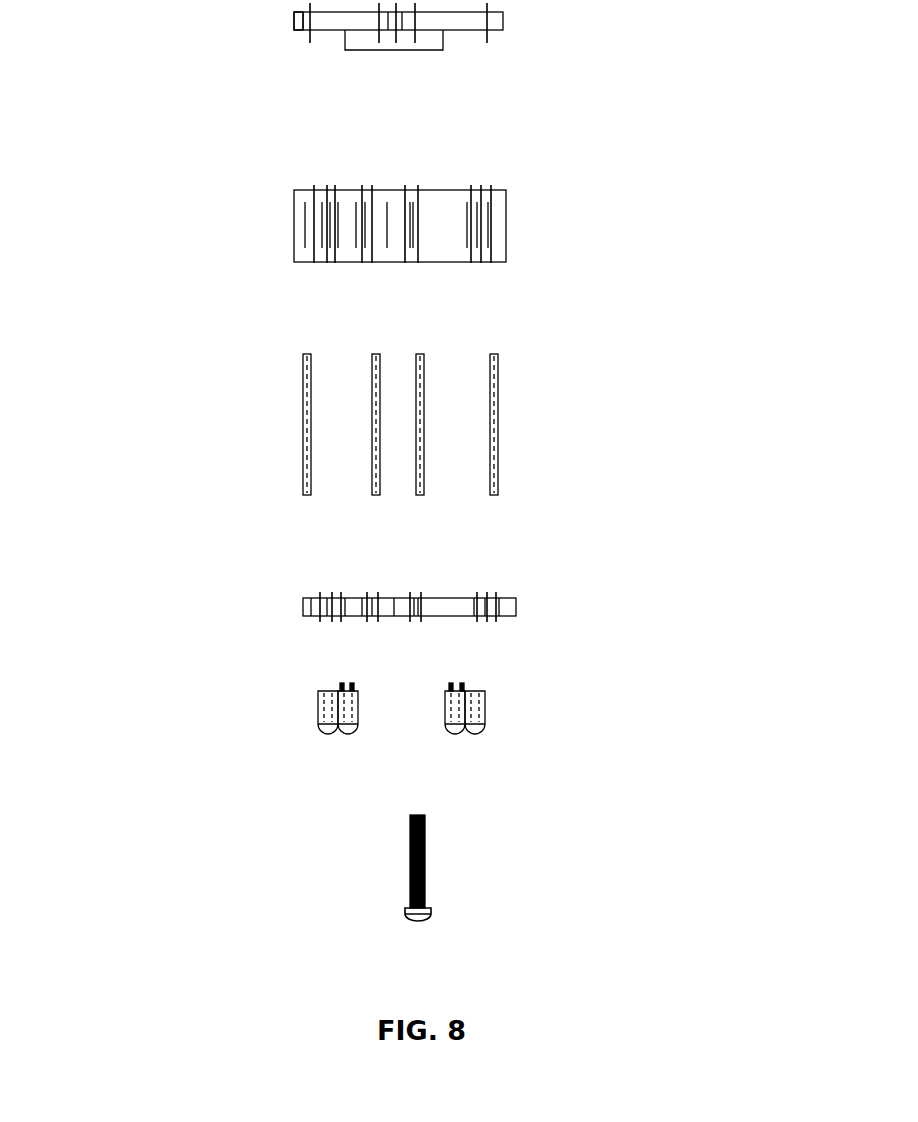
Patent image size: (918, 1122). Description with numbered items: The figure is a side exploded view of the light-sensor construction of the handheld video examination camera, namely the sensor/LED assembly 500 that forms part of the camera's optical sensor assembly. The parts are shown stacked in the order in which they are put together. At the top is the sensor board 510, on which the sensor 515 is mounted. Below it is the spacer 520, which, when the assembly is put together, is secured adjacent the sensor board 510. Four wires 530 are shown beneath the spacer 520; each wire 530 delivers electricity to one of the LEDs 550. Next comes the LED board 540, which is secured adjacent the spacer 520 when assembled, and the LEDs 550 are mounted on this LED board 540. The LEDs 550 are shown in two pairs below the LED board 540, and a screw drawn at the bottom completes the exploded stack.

The sensor/LED assembly 500 is at (630, 777).
The sensor board 510 is at (513, 27).
The sensor 515 is at (298, 42).
The spacer 520 is at (522, 216).
The wires 530 is at (515, 443).
The LED board 540 is at (523, 605).
The LEDs 550 is at (500, 712).